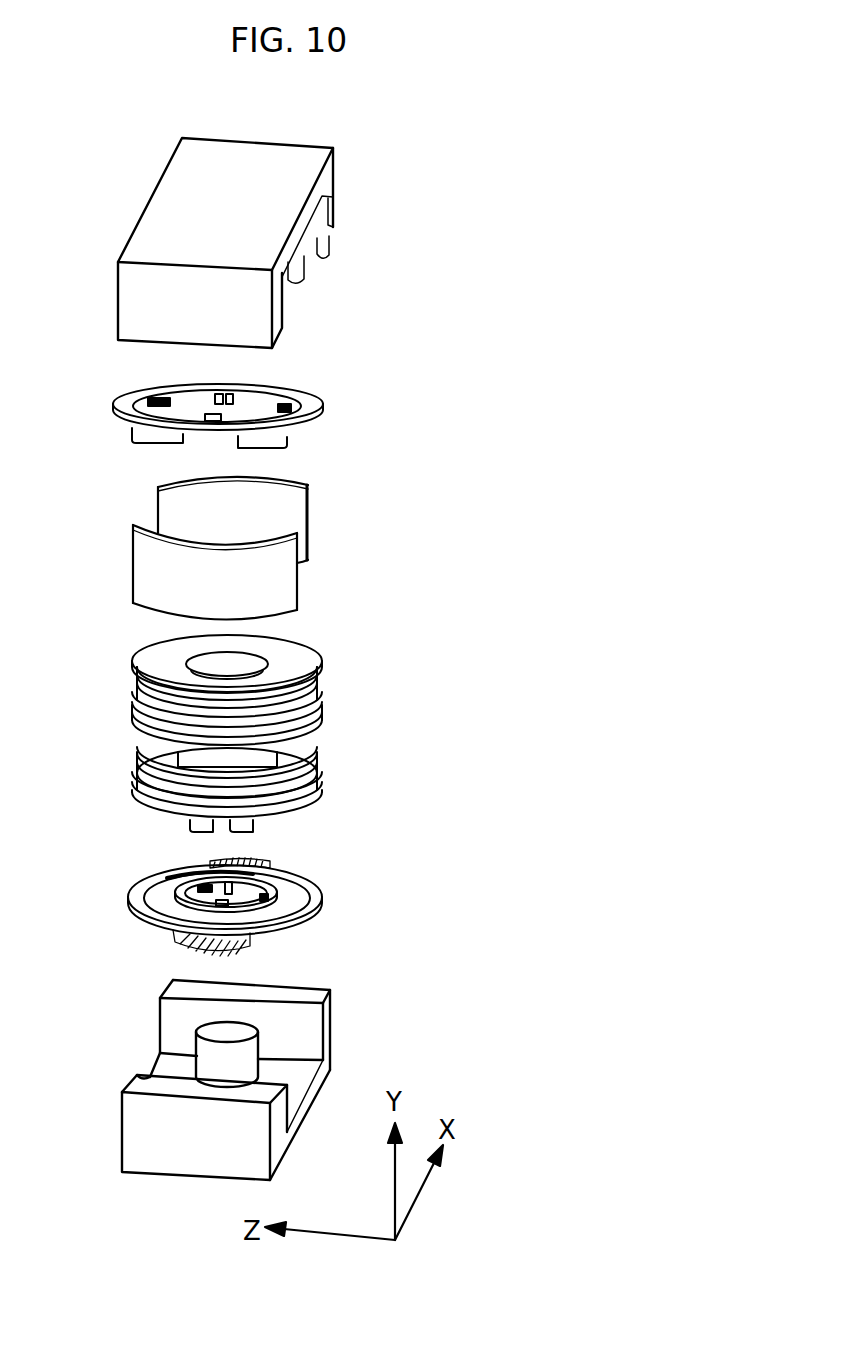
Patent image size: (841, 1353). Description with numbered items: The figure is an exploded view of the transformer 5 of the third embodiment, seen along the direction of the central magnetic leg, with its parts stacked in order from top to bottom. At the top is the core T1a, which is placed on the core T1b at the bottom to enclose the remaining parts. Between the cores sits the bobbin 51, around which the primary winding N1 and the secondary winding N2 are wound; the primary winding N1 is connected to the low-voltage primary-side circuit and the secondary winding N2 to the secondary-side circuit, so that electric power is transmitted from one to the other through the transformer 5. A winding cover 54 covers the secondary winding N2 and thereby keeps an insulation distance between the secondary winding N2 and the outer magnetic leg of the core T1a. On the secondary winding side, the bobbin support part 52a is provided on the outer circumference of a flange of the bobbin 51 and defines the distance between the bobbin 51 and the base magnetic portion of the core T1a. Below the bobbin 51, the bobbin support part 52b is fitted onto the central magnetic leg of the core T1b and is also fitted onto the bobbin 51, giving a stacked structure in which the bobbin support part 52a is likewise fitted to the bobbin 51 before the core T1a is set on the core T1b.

The transformer 5 is at (51, 157).
The core T1a is at (336, 184).
The bobbin support part 52a is at (321, 411).
The winding cover 54 is at (312, 529).
The bobbin 51 is at (319, 677).
The secondary winding N2 is at (317, 699).
The primary winding N1 is at (317, 770).
The bobbin support part 52b is at (317, 886).
The core T1b is at (337, 1003).